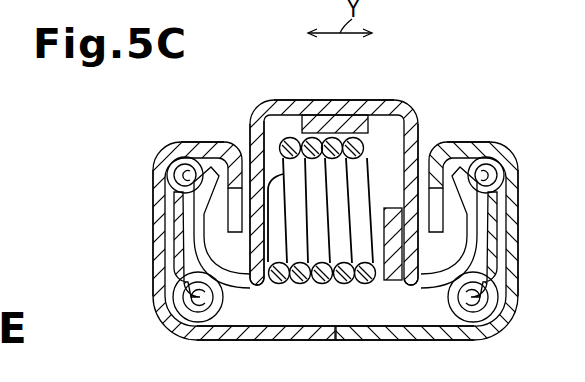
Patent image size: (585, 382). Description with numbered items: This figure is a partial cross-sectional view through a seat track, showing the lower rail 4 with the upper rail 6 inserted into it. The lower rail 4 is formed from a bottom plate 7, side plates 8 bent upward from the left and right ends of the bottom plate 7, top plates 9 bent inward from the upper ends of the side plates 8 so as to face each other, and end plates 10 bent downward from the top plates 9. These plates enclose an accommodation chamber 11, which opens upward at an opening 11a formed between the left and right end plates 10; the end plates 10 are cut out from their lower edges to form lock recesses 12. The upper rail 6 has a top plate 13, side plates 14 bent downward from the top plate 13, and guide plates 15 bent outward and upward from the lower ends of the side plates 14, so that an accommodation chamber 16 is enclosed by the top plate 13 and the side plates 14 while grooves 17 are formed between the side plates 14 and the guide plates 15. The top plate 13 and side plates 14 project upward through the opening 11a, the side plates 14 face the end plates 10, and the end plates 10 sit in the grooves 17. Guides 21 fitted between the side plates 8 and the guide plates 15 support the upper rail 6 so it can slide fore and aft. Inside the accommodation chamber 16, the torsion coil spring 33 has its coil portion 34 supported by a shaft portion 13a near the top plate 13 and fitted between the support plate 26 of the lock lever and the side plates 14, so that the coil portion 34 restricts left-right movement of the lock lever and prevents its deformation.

The lower rail 4 is at (400, 343).
The upper rail 6 is at (394, 95).
The bottom plate 7 is at (325, 334).
The side plates 8 is at (160, 228).
The top plates 9 is at (185, 141).
The end plates 10 is at (205, 160).
The accommodation chamber 11 is at (283, 328).
The opening 11a is at (236, 150).
The lock recesses 12 is at (203, 232).
The top plate 13 is at (368, 105).
The shaft portion 13a is at (318, 118).
The side plates 14 is at (253, 109).
The guide plates 15 is at (177, 200).
The accommodation chamber 16 is at (275, 110).
The grooves 17 is at (226, 290).
The guides 21 is at (220, 323).
The support plate 26 is at (392, 208).
The torsion coil spring 33 is at (337, 137).
The coil portion 34 is at (313, 285).